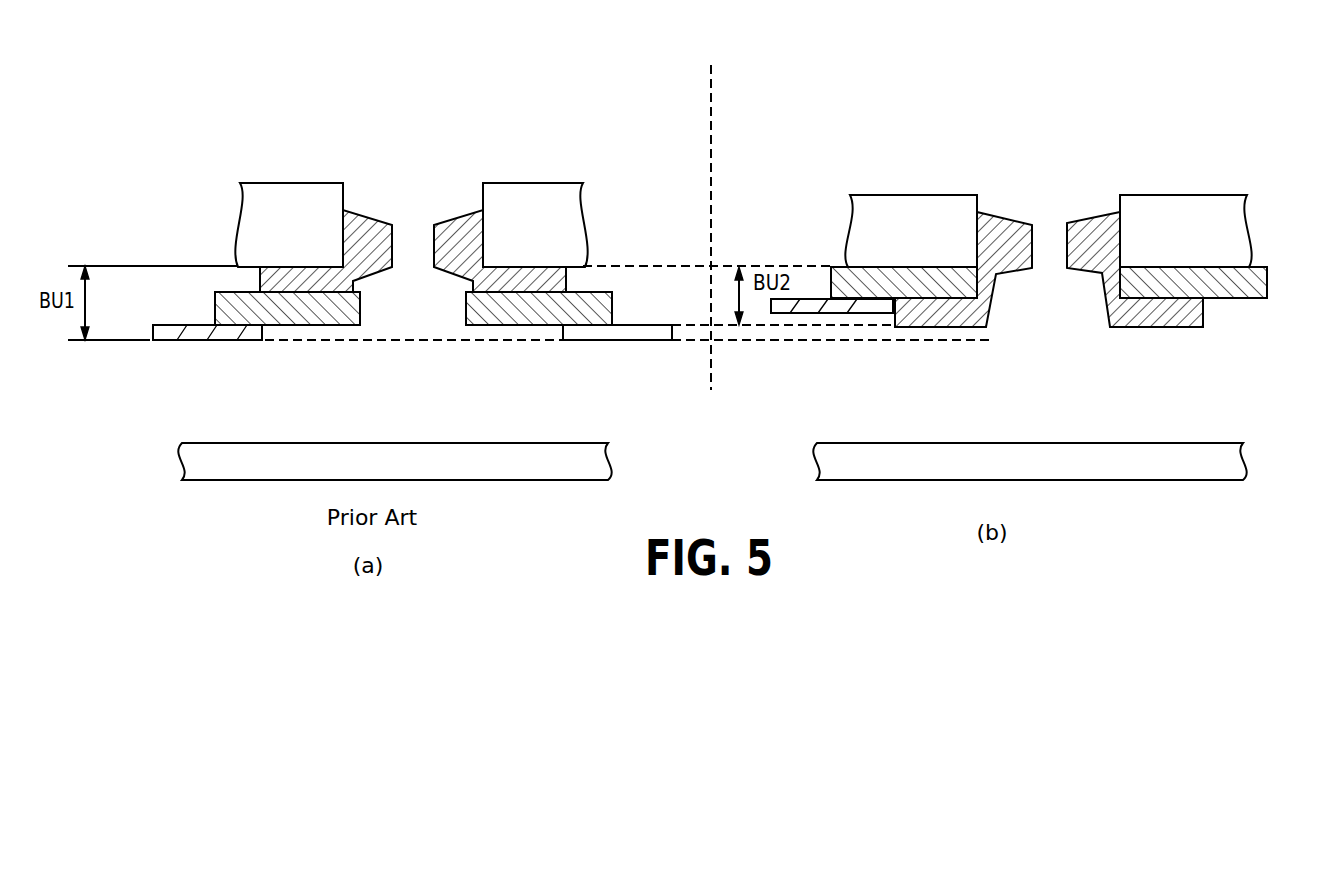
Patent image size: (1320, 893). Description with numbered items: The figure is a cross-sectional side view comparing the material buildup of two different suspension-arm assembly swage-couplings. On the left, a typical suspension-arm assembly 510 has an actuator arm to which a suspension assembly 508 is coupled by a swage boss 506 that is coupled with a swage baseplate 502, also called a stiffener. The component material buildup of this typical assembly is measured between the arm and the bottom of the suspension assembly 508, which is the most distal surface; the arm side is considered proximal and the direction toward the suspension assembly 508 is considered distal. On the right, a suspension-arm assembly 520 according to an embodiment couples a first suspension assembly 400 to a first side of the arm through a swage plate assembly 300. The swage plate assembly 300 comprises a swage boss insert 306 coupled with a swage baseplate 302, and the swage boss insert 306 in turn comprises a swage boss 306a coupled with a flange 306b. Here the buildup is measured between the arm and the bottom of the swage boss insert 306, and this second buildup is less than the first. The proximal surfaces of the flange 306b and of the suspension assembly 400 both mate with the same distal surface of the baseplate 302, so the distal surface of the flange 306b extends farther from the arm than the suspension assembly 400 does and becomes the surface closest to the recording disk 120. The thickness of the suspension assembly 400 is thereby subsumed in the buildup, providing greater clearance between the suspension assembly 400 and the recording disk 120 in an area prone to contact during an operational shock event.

The suspension-arm assembly 510 is at (293, 80).
The suspension-arm assembly 520 is at (901, 80).
The swage boss 506 is at (370, 237).
The swage baseplate 502 is at (508, 313).
The suspension assembly 508 is at (223, 330).
The recording disk 120 is at (215, 474).
The suspension assembly 400 is at (810, 305).
The swage baseplate 302 is at (885, 287).
The swage boss insert 306 is at (1047, 300).
The swage boss 306a is at (1008, 257).
The flange 306b is at (1049, 322).
The swage plate assembly 300 is at (1053, 315).